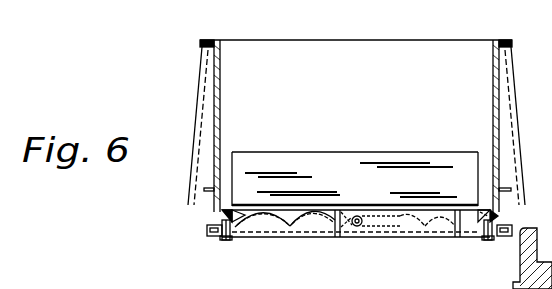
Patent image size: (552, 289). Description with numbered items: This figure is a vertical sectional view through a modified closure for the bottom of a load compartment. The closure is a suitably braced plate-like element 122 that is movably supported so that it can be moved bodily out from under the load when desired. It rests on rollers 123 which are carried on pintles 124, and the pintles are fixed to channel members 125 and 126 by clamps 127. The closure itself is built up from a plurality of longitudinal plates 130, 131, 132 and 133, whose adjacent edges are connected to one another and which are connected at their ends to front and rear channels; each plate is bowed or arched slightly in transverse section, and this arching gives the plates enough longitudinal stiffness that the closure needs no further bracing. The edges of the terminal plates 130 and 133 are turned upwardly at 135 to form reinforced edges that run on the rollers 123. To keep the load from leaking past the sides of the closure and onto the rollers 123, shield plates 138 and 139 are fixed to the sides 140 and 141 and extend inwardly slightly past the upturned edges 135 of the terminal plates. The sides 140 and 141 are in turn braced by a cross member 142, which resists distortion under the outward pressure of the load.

The plate-like element 122 is at (325, 208).
The rollers 123 is at (223, 242).
The pintles 124 is at (215, 244).
The channel member 125 is at (490, 200).
The channel member 126 is at (213, 206).
The clamps 127 is at (206, 238).
The longitudinal plate 130 is at (438, 230).
The longitudinal plate 131 is at (405, 231).
The longitudinal plate 132 is at (310, 240).
The longitudinal plate 133 is at (271, 240).
The upturned edge 135 is at (226, 214).
The shield plate 138 is at (489, 202).
The shield plate 139 is at (231, 203).
The side 140 is at (493, 106).
The side 141 is at (220, 117).
The cross member 142 is at (390, 164).